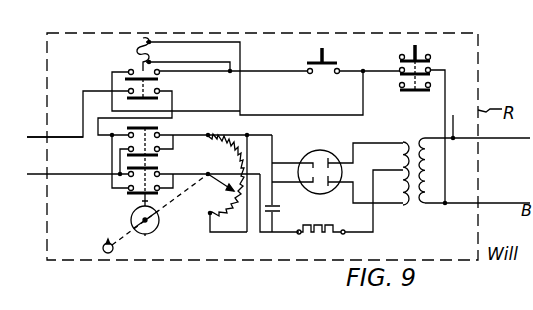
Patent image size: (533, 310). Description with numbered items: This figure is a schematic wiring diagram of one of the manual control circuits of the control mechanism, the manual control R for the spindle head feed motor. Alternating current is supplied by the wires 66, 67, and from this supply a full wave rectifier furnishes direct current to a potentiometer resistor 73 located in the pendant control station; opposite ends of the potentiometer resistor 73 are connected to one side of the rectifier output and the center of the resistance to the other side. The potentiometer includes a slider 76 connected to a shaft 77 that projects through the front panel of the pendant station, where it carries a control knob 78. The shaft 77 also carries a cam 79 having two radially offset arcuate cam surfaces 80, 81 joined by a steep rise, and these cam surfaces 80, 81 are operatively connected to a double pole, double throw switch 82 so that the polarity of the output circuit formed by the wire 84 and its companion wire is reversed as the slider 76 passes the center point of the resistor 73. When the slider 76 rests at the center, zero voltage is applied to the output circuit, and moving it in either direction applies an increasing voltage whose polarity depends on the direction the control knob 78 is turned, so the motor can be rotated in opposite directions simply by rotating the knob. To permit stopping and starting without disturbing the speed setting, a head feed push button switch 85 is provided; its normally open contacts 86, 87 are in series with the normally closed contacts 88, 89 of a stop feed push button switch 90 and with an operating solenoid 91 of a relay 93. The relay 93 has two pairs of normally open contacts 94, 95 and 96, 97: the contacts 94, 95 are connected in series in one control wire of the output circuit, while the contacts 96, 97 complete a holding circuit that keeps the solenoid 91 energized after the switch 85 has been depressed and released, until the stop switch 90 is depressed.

The alternating current supply wire 66 is at (497, 142).
The alternating current supply wire 67 is at (486, 201).
The potentiometer resistor 73 is at (240, 133).
The potentiometer slider 76 is at (222, 169).
The shaft 77 is at (170, 196).
The control knob 78 is at (107, 258).
The cam 79 is at (149, 235).
The cam surface 80 is at (172, 236).
The cam surface 81 is at (130, 219).
The double pole, double throw switch 82 is at (142, 201).
The output circuit wire 84 is at (43, 175).
The head feed push button switch 85 is at (325, 52).
The normally open contact 86 is at (311, 73).
The normally open contact 87 is at (337, 74).
The normally closed contact 88 is at (399, 70).
The normally closed contact 89 is at (431, 70).
The stop feed push button switch 90 is at (417, 44).
The operating solenoid 91 is at (140, 43).
The relay 93 is at (160, 100).
The normally open relay contact 94 is at (160, 90).
The normally open relay contact 95 is at (128, 89).
The normally open relay contact 96 is at (160, 72).
The normally open relay contact 97 is at (129, 70).